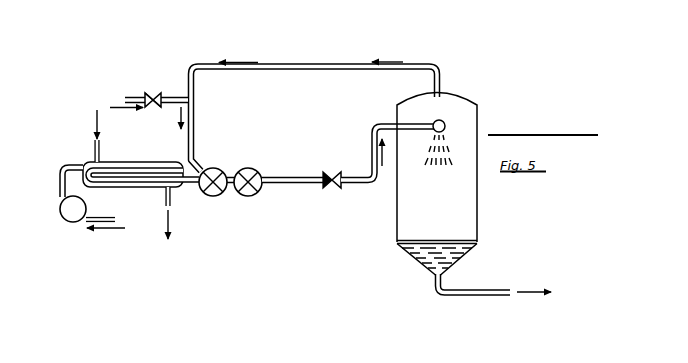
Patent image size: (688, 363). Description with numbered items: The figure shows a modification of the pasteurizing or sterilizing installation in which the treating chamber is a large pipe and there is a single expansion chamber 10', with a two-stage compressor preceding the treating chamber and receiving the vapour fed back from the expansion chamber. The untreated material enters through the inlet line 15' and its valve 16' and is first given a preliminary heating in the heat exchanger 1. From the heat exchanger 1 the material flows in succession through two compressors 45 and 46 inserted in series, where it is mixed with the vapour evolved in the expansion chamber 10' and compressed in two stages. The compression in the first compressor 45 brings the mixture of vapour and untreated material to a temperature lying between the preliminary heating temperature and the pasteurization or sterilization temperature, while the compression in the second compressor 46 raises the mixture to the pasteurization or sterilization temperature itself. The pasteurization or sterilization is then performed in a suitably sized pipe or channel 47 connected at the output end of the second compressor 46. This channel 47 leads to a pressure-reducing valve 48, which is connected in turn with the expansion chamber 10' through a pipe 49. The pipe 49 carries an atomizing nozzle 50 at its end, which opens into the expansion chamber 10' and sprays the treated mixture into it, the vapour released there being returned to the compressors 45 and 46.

The heat exchanger 1 is at (117, 177).
The feed inlet pipe 15' is at (125, 86).
The inlet valve 16' is at (157, 90).
The first compressor 45 is at (212, 173).
The second compressor 46 is at (249, 172).
The pipe or channel 47 is at (288, 184).
The pressure-reducing valve 48 is at (335, 189).
The pipe 49 is at (373, 140).
The atomizing nozzle 50 is at (445, 122).
The expansion chamber 10' is at (459, 193).